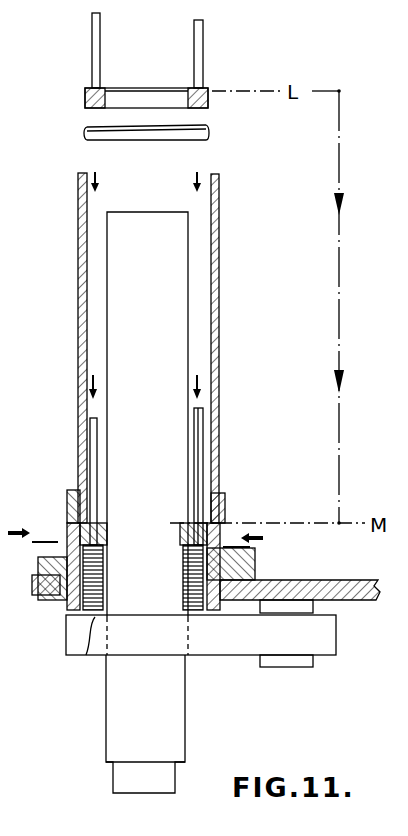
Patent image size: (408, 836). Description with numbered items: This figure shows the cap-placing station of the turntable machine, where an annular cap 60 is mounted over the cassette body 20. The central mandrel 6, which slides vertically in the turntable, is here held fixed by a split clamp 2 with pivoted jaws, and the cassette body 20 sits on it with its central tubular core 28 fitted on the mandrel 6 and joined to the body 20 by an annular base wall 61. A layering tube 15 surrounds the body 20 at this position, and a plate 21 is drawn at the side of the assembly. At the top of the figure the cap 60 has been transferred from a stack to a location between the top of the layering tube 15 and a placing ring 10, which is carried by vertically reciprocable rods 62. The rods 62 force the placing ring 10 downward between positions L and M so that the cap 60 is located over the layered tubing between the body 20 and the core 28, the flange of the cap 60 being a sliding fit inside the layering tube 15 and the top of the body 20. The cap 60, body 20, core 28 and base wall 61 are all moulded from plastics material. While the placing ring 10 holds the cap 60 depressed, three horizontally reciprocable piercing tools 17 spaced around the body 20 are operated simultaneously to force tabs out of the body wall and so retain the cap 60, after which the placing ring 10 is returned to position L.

The split clamp 2 is at (318, 650).
The central mandrel 6 is at (165, 710).
The placing ring 10 is at (85, 100).
The layering tube 15 is at (80, 395).
The piercing tool 17 is at (47, 548).
The cassette body 20 is at (66, 600).
The support plate 21 is at (355, 588).
The central tubular core 28 is at (112, 548).
The annular cap 60 is at (212, 130).
The annular base wall 61 is at (93, 655).
The vertically reciprocable rods 62 is at (100, 56).